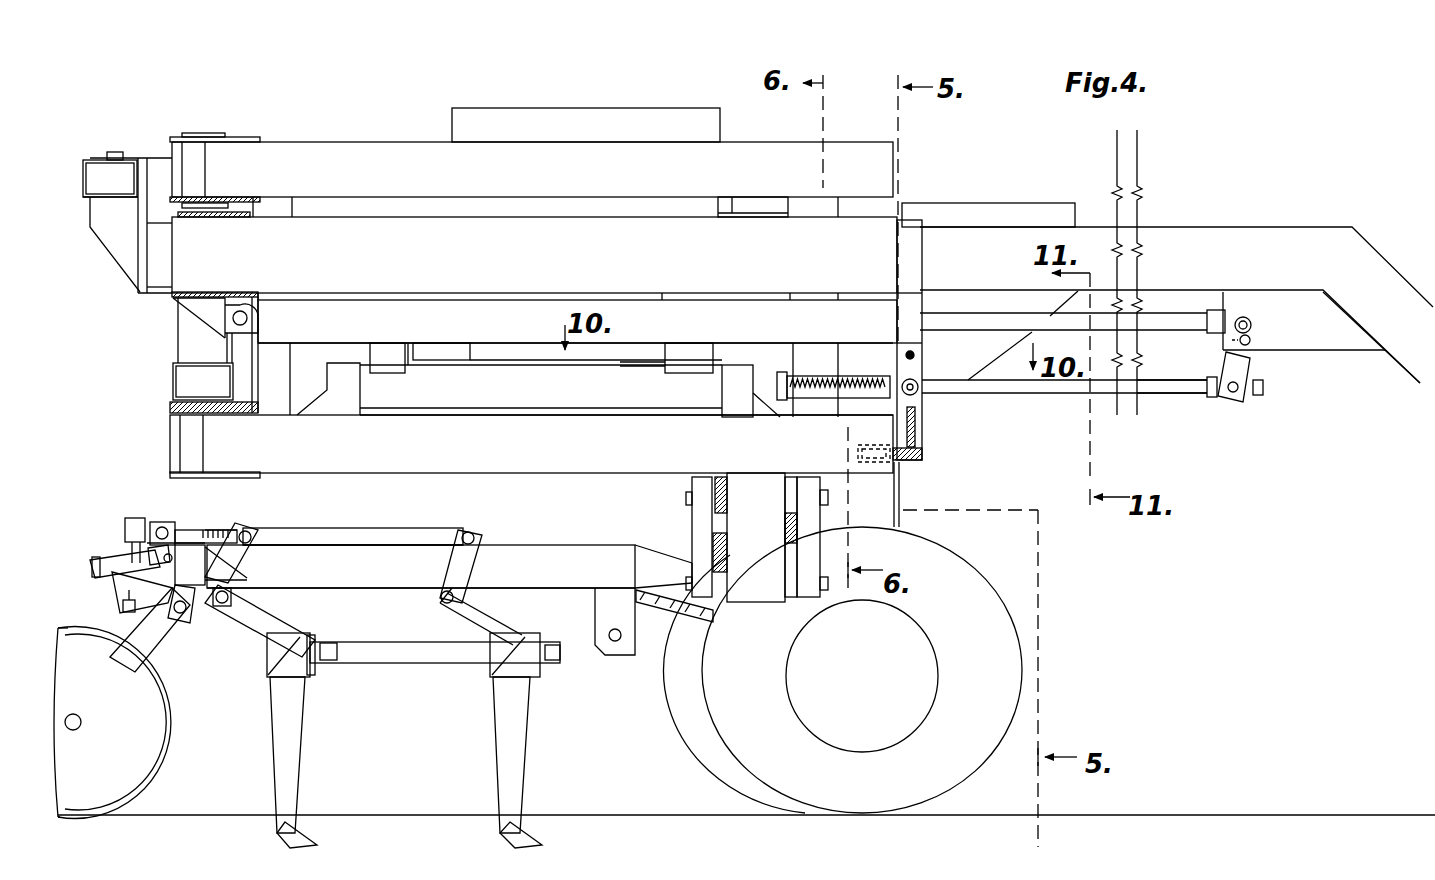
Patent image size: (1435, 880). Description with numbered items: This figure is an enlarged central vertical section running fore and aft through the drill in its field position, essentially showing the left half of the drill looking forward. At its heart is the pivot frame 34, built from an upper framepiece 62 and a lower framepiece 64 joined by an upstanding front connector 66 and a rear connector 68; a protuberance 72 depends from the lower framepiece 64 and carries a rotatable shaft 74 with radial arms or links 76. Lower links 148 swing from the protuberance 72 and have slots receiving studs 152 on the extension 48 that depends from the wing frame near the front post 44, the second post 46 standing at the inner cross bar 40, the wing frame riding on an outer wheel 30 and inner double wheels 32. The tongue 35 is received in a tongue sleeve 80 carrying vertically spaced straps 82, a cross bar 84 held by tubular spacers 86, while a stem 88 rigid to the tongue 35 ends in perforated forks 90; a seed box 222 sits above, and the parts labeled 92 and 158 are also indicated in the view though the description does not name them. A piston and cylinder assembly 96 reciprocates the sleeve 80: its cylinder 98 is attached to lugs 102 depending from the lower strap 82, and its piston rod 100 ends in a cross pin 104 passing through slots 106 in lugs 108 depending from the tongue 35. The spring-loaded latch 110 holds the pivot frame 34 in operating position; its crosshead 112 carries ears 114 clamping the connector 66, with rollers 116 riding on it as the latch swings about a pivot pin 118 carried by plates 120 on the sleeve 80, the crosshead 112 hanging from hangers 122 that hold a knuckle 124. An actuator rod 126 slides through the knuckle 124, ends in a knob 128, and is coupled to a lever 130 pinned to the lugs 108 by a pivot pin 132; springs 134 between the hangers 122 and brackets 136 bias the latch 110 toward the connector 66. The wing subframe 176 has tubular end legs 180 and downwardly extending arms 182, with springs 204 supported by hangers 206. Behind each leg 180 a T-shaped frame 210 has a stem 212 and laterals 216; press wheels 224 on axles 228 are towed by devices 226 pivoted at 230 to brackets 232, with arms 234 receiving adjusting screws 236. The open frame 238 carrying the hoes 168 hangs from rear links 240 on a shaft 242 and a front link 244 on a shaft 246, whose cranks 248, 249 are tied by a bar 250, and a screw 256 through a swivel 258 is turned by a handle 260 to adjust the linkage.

The outer wheel 30 is at (688, 767).
The inner double wheels 32 is at (1008, 633).
The pivot frame 34 is at (905, 172).
The tongue 35 is at (153, 250).
The inner cross bar 40 is at (530, 365).
The front post 44 is at (768, 347).
The post 46 is at (447, 343).
The extension 48 is at (787, 492).
The upper framepiece 62 is at (400, 147).
The lower framepiece 64 is at (528, 463).
The front connector 66 is at (867, 208).
The rear connector 68 is at (283, 207).
The depending protuberance 72 is at (762, 592).
The rotatable shaft 74 is at (495, 402).
The radial arms or links 76 is at (370, 352).
The tongue sleeve 80 is at (585, 223).
The straps 82 is at (220, 222).
The cross bar 84 is at (177, 383).
The tubular spacers 86 is at (183, 342).
The stem 88 is at (83, 187).
The perforated forks 90 is at (100, 153).
The upright post 92 is at (165, 162).
The fluid pressure piston and cylinder unit 96 is at (525, 297).
The cylinder 98 is at (755, 308).
The piston rod 100 is at (940, 318).
The lugs 102 is at (200, 313).
The cross pin 104 is at (1257, 320).
The slots 106 is at (1227, 328).
The lugs 108 is at (1337, 350).
The latch 110 is at (930, 452).
The crosshead 112 is at (903, 470).
The ears 114 is at (880, 445).
The rollers 116 is at (858, 455).
The pivot pin 118 is at (913, 355).
The plates 120 is at (942, 398).
The hangers 122 is at (918, 435).
The knuckle 124 is at (927, 380).
The actuator rod 126 is at (1163, 392).
The knob 128 is at (877, 377).
The lever 130 is at (1253, 367).
The pivot pin 132 is at (1257, 340).
The springs 134 is at (838, 377).
The brackets 136 is at (802, 402).
The lower links 148 is at (692, 528).
The studs 152 is at (687, 497).
The spacer block 158 is at (752, 203).
The hoes 168 is at (292, 772).
The subframe 176 is at (600, 537).
The end legs 180 is at (545, 552).
The arms 182 is at (703, 613).
The springs 204 is at (730, 560).
The hangers 206 is at (603, 602).
The T-shaped frame 210 is at (399, 558).
The stem 212 is at (337, 577).
The laterals 216 is at (213, 525).
The seed boxes 222 is at (578, 110).
The press wheels 224 is at (176, 746).
The devices 226 is at (143, 637).
The axles 228 is at (82, 722).
The pivot 230 is at (187, 633).
The brackets 232 is at (150, 603).
The arms 234 is at (127, 578).
The screws 236 is at (90, 562).
The open frame 238 is at (367, 665).
The rear links 240 is at (260, 618).
The shaft 242 is at (220, 607).
The front link 244 is at (488, 615).
The shaft 246 is at (438, 603).
The crank 248 is at (250, 560).
The crank 249 is at (463, 565).
The bar 250 is at (332, 534).
The screw 256 is at (190, 528).
The swivel 258 is at (152, 522).
The handle 260 is at (128, 516).